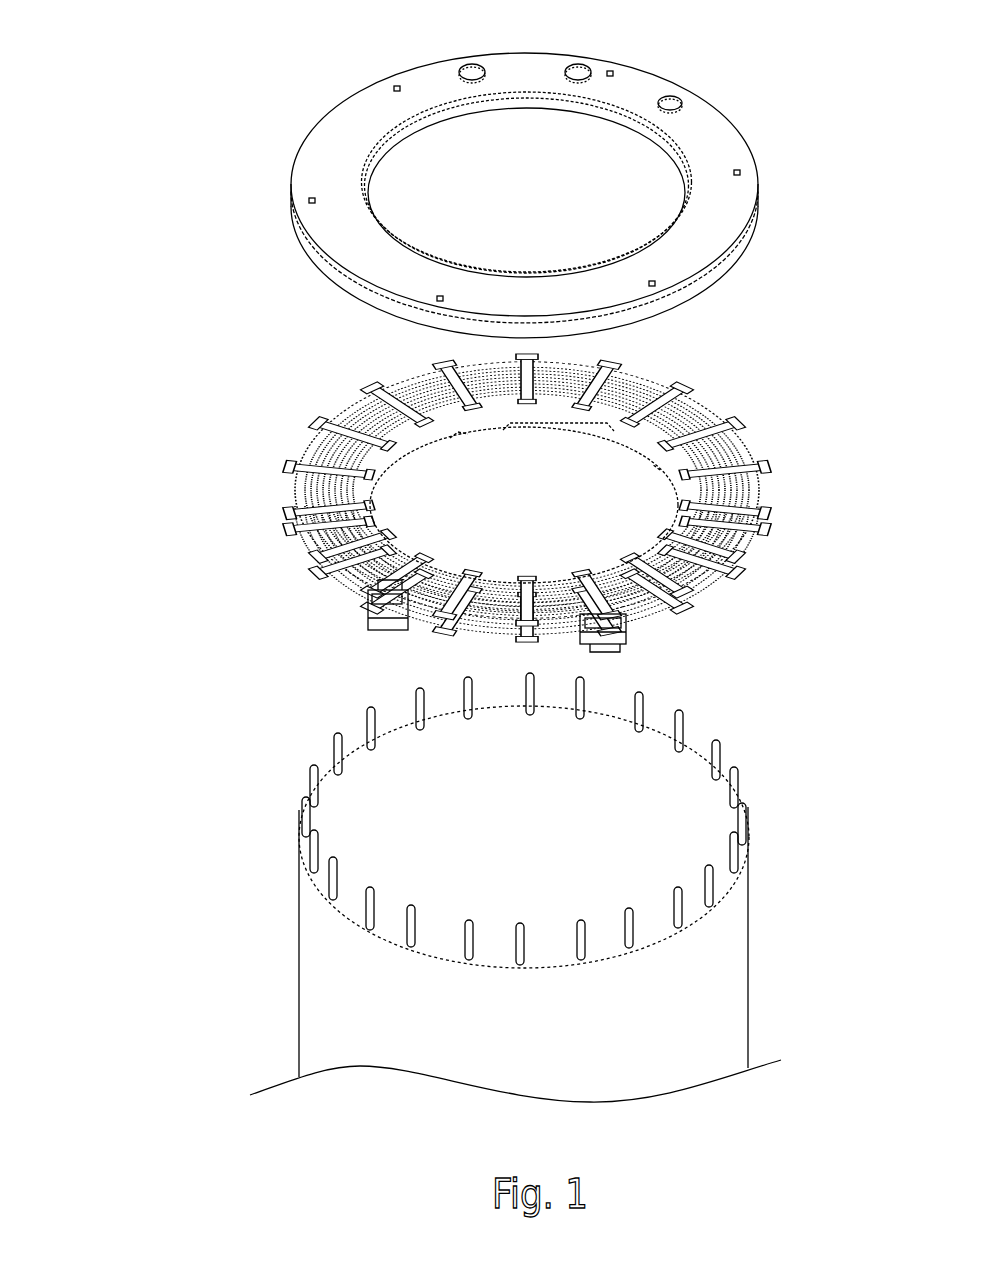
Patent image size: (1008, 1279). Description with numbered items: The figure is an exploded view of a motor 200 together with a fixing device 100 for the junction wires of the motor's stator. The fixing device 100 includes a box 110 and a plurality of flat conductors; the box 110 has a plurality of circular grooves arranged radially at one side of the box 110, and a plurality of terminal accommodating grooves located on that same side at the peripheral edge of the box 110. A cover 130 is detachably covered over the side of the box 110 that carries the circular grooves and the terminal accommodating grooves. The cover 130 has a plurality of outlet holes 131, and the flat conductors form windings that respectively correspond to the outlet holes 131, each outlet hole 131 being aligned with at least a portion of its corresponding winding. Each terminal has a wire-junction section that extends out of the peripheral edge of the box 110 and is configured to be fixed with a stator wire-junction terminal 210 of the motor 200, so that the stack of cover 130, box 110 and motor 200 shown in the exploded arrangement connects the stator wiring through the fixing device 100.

The fixing device 100 is at (212, 313).
The box 110 is at (345, 562).
The cover 130 is at (717, 143).
The outlet holes 131 is at (685, 89).
The motor 200 is at (323, 1005).
The stator wire-junction terminal 210 is at (300, 812).